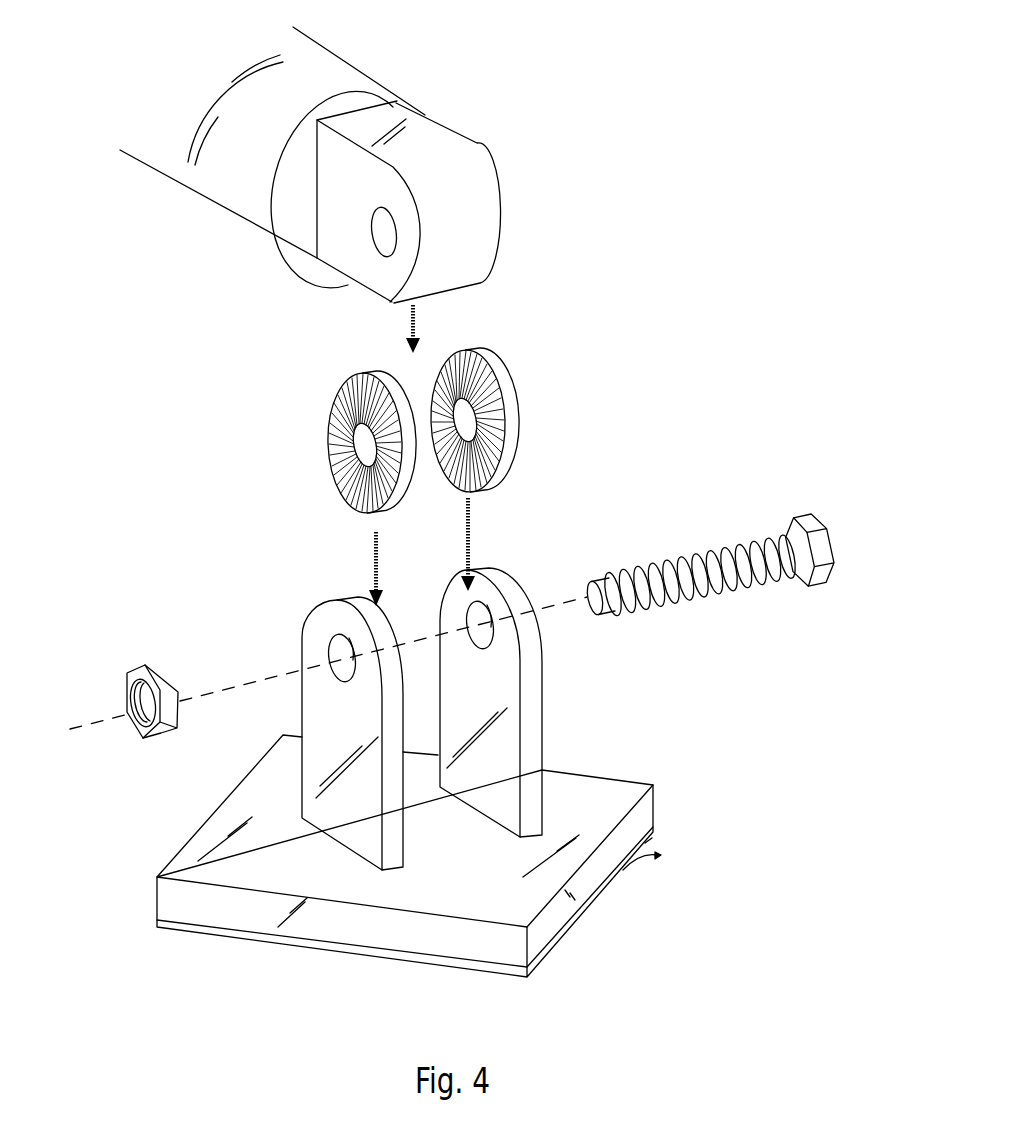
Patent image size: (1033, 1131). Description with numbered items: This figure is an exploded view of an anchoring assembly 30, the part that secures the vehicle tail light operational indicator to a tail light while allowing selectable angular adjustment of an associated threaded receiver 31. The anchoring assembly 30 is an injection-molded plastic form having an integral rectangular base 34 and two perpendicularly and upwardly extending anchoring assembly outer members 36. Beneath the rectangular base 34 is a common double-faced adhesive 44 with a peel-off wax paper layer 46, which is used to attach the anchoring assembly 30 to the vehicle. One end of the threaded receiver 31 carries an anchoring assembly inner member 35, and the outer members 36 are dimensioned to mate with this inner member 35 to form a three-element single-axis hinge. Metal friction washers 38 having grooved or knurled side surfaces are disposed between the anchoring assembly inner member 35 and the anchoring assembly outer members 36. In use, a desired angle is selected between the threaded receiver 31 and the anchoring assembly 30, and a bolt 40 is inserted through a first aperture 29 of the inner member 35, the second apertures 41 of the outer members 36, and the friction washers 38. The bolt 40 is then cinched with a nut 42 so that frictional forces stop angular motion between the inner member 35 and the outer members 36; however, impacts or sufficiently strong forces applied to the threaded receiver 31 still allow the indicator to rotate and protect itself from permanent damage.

The first aperture 29 is at (383, 233).
The anchoring assembly 30 is at (687, 94).
The threaded receiver 31 is at (200, 187).
The rectangular base 34 is at (642, 810).
The anchoring assembly inner member 35 is at (482, 207).
The anchoring assembly outer members 36 is at (528, 773).
The friction washers 38 is at (363, 372).
The bolt 40 is at (792, 527).
The second apertures 41 is at (333, 637).
The nut 42 is at (138, 667).
The double-faced adhesive 44 is at (650, 840).
The peel-off wax paper layer 46 is at (660, 857).